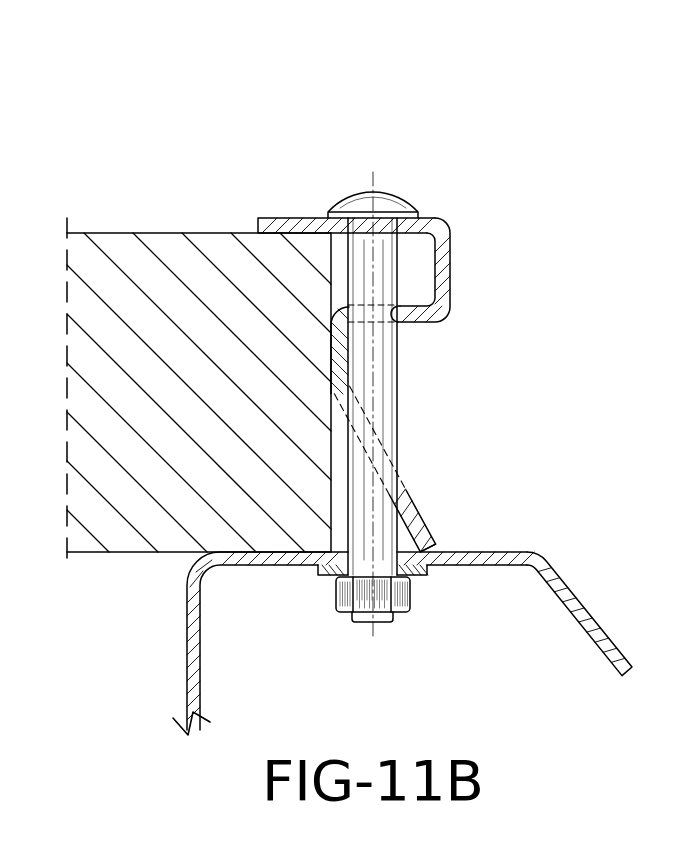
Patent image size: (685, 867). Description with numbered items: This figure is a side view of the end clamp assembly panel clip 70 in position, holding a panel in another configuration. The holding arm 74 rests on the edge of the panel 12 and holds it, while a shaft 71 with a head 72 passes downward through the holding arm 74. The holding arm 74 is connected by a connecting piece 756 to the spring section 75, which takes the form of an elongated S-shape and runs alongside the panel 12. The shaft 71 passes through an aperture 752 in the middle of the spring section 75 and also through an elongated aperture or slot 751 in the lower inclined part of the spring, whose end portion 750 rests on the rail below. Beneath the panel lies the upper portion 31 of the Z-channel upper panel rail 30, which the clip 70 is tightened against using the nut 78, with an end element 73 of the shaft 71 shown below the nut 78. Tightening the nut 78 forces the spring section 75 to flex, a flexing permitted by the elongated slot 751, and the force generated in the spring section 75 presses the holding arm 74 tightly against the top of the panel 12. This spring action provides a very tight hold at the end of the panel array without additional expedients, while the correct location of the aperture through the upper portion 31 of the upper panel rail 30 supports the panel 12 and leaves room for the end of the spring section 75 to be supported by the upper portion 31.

The end clamp assembly panel clip 70 is at (364, 296).
The panel 12 is at (142, 280).
The holding arm 74 is at (282, 218).
The head 72 is at (385, 205).
The connecting piece 756 is at (440, 262).
The aperture 752 is at (395, 323).
The spring section 75 is at (338, 362).
The elongated aperture or slot 751 is at (403, 493).
The end portion of clip strip 750 is at (427, 530).
The shaft 71 is at (337, 382).
The upper panel rail 30 is at (195, 643).
The nut 78 is at (347, 588).
The nut 73 is at (385, 615).
The upper portion 31 is at (492, 560).